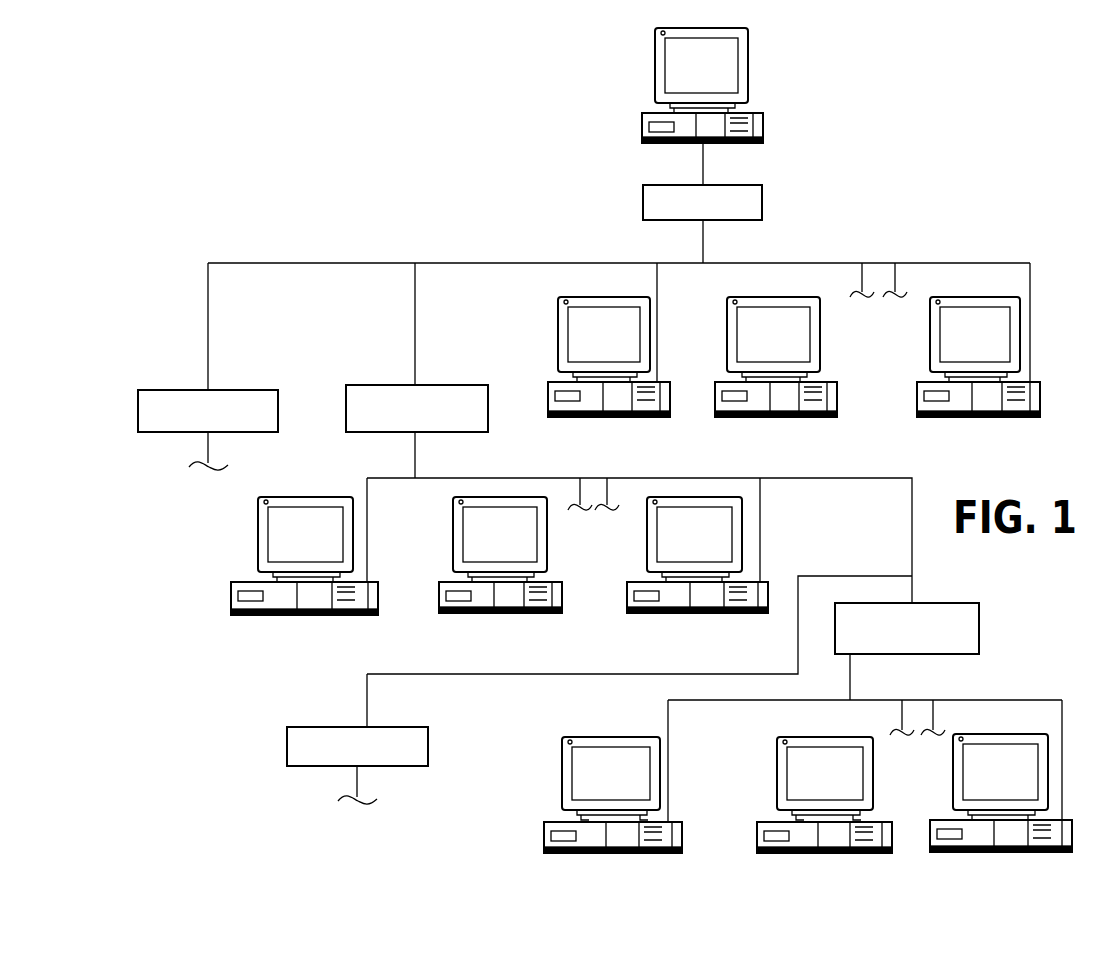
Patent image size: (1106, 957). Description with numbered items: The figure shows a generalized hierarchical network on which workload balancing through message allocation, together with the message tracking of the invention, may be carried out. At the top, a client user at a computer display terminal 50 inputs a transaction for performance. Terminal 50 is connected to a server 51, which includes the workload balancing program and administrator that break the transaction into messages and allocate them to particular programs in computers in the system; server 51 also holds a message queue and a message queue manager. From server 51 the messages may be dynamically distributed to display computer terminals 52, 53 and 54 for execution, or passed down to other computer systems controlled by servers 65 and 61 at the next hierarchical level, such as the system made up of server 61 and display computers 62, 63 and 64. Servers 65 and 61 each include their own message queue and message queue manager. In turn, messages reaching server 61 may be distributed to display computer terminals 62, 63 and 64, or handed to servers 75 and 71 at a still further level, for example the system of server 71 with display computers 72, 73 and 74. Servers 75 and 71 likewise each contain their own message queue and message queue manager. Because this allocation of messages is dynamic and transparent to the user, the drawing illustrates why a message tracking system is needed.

The computer display terminal 50 is at (748, 63).
The server 51 is at (762, 195).
The display computer terminal 52 is at (610, 417).
The display computer terminal 53 is at (782, 417).
The display computer terminal 54 is at (975, 417).
The server 61 is at (445, 385).
The display computer 62 is at (298, 615).
The display computer 63 is at (490, 613).
The display computer 64 is at (683, 613).
The server 65 is at (254, 390).
The server 71 is at (979, 620).
The display computer 72 is at (607, 853).
The display computer 73 is at (803, 853).
The display computer 74 is at (998, 852).
The server 75 is at (403, 727).